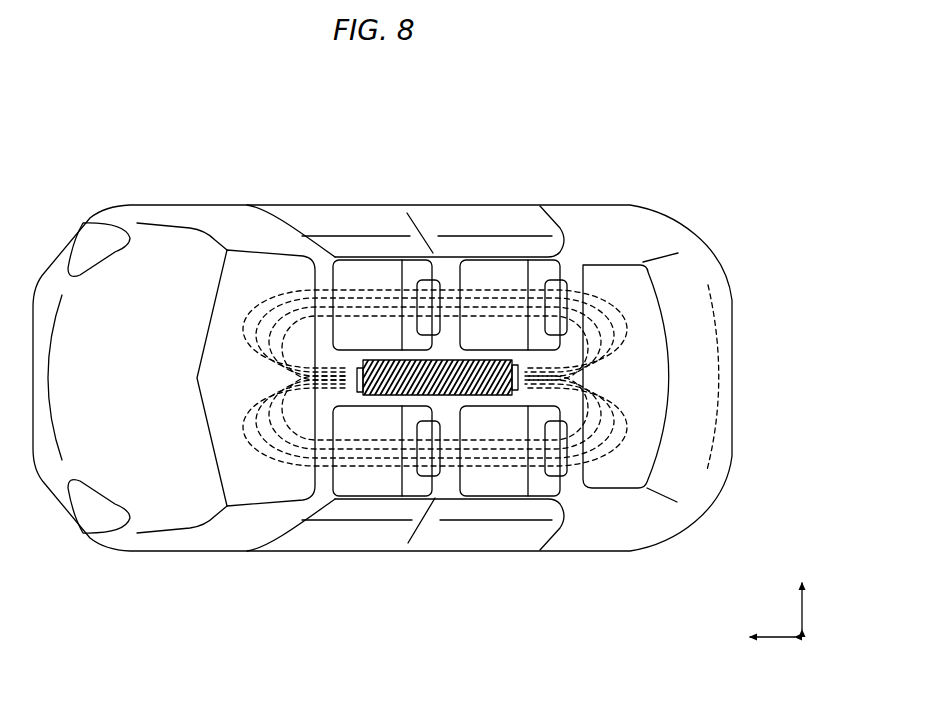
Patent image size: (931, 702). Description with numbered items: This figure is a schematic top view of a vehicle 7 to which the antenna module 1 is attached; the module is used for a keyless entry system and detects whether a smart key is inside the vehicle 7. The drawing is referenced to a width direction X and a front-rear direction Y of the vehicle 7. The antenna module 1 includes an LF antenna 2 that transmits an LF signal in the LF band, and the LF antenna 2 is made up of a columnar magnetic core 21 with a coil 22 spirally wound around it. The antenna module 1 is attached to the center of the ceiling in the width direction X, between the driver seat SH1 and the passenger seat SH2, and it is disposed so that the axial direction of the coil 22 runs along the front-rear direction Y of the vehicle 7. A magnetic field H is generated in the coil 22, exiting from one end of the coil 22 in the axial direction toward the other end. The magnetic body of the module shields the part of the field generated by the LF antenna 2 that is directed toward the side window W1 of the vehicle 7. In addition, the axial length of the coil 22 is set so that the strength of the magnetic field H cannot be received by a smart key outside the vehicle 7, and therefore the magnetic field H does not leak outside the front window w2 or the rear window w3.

The antenna module 1 is at (334, 387).
The LF antenna 2 is at (420, 369).
The magnetic core 21 is at (363, 362).
The coil 22 is at (503, 357).
The vehicle 7 is at (652, 546).
The magnetic field H is at (627, 323).
The driver seat SH1 is at (388, 275).
The passenger seat SH2 is at (387, 478).
The side window W1 is at (352, 247).
The front window w2 is at (247, 270).
The rear window w3 is at (617, 468).
The width direction X is at (805, 607).
The front-rear direction Y is at (772, 640).